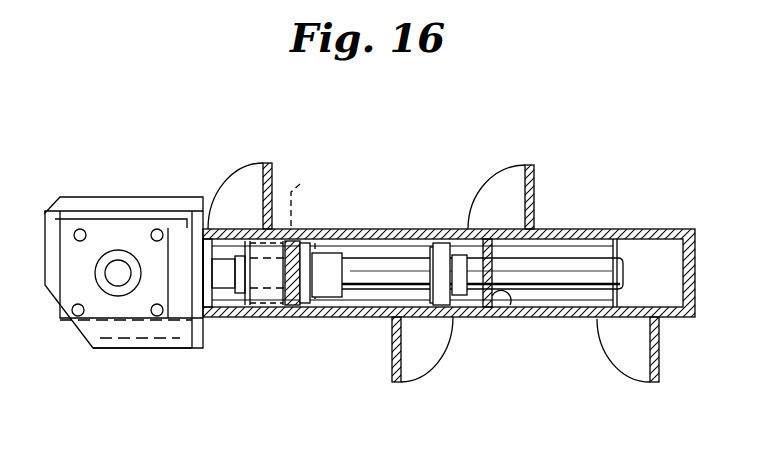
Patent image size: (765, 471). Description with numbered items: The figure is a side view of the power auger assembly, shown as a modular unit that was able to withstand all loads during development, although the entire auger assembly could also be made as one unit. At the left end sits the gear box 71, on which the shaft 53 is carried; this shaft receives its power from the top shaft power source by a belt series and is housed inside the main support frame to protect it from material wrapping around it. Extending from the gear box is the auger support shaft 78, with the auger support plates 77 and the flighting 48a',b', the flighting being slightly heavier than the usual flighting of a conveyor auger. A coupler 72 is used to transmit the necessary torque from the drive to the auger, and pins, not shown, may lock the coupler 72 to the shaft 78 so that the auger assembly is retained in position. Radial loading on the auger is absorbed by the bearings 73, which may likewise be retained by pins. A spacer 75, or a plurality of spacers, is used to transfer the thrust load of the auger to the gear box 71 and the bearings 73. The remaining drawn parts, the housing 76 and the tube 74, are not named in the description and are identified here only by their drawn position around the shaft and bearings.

The gear housing 76 is at (146, 197).
The gear box 71 is at (120, 320).
The shaft 53 is at (118, 273).
The tubular housing 74 is at (382, 228).
The flighting 48a',b' is at (433, 304).
The spacer 75 is at (291, 235).
The coupler 72 is at (229, 300).
The auger support shaft 78 is at (625, 268).
The bearings 73 is at (457, 228).
The auger support plates 77 is at (500, 308).